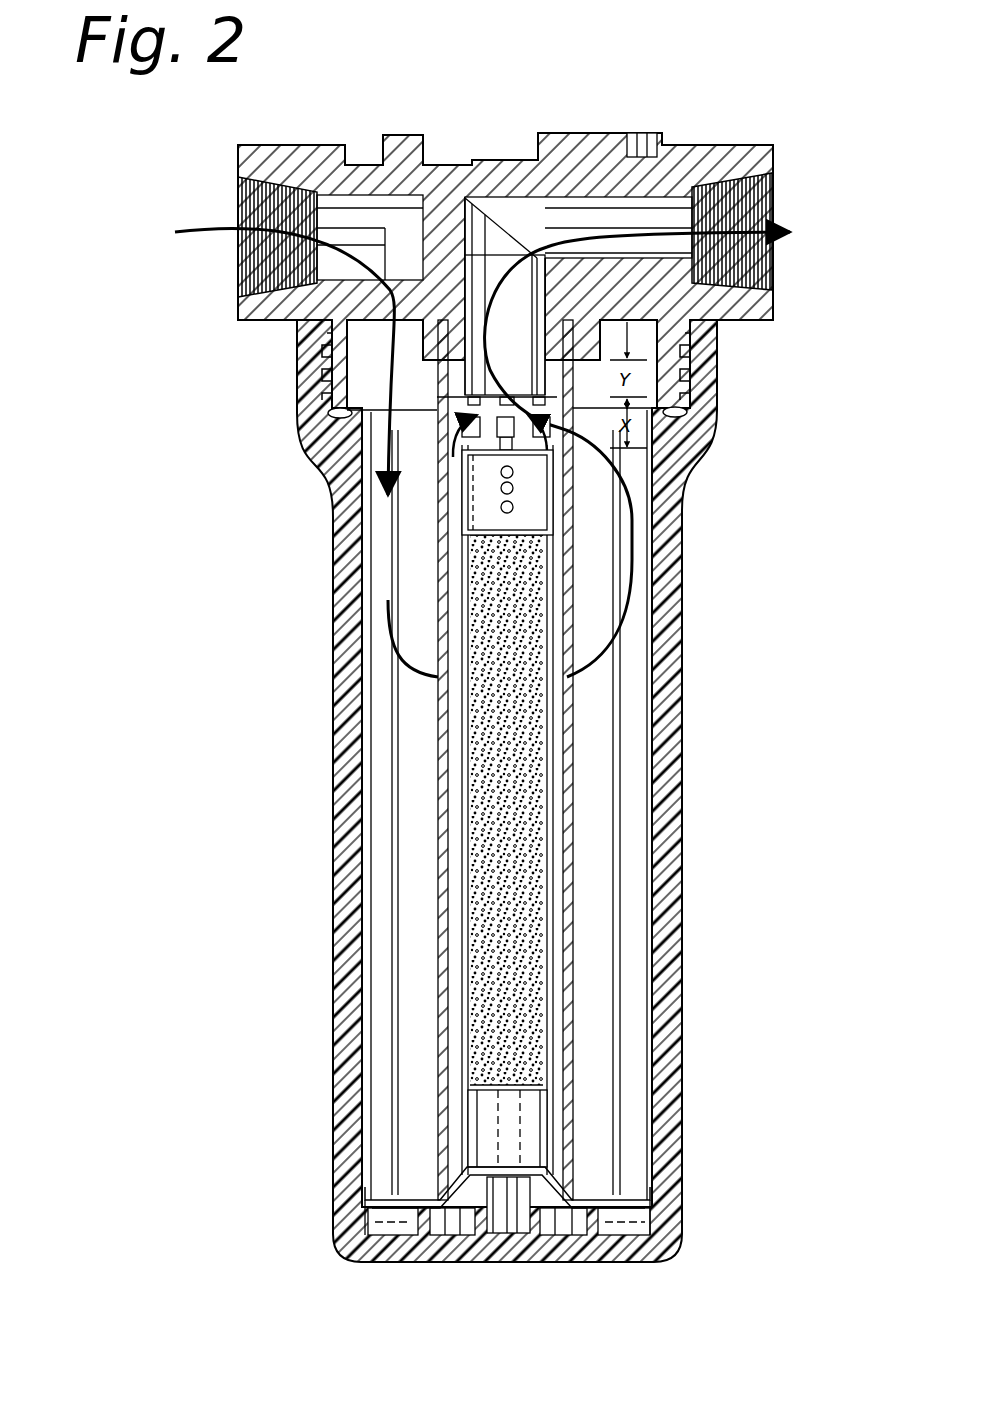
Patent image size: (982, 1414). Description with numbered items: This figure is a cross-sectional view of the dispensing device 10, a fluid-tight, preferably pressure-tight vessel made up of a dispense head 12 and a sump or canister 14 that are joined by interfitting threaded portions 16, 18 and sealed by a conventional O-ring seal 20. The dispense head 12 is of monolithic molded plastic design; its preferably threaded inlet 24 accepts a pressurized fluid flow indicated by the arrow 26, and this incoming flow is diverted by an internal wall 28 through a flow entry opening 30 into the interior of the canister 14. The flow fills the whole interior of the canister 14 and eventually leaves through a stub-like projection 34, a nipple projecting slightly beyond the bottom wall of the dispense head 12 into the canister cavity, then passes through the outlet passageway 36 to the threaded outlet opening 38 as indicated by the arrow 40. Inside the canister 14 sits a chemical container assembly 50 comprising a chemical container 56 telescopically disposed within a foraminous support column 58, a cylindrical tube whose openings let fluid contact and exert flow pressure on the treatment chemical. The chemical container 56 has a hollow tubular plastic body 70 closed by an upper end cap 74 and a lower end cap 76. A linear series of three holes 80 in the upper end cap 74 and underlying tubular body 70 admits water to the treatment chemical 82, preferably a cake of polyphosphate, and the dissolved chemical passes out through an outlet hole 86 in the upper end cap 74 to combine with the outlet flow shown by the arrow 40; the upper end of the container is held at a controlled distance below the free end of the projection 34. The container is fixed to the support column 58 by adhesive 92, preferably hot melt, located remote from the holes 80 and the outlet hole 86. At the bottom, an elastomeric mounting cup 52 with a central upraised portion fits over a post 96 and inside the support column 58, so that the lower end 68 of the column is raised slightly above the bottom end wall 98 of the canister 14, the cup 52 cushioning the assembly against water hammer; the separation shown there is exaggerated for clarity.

The dispensing device 10 is at (766, 110).
The dispense head 12 is at (440, 160).
The canister 14 is at (686, 552).
The threaded portion 16 is at (655, 372).
The threaded portion 18 is at (717, 410).
The O-ring seal 20 is at (333, 413).
The inlet 24 is at (240, 268).
The arrow 26 is at (240, 262).
The internal wall 28 is at (423, 238).
The flow entry opening 30 is at (362, 438).
The projection 34 is at (508, 365).
The outlet passageway 36 is at (612, 218).
The threaded outlet opening 38 is at (758, 268).
The arrow 40 is at (785, 222).
The chemical container assembly 50 is at (578, 720).
The mounting cup 52 is at (600, 1202).
The chemical container 56 is at (549, 760).
The foraminous support column 58 is at (445, 737).
The lower end 68 is at (565, 1190).
The tubular body 70 is at (468, 620).
The upper end cap 74 is at (478, 512).
The lower end cap 76 is at (490, 1120).
The holes 80 is at (513, 508).
The treatment chemical 82 is at (470, 870).
The outlet hole 86 is at (508, 420).
The adhesive 92 is at (560, 1128).
The post 96 is at (530, 1195).
The bottom end wall 98 is at (610, 1255).